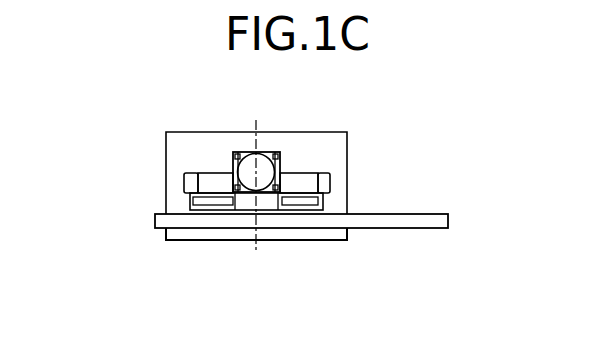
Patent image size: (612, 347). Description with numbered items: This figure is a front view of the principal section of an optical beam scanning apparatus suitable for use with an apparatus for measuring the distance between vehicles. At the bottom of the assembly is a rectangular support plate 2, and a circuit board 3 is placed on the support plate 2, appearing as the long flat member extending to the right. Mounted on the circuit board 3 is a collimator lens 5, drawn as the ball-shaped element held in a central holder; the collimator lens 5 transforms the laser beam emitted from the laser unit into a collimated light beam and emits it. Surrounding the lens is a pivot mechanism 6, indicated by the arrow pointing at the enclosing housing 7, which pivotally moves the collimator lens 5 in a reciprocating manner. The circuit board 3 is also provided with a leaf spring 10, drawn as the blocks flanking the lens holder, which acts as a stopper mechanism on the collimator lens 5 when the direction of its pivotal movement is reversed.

The support plate 2 is at (312, 229).
The circuit board 3 is at (440, 219).
The collimator lens 5 is at (262, 166).
The pivot mechanism 6 is at (156, 176).
The housing 7 is at (315, 148).
The leaf spring 10 is at (207, 180).